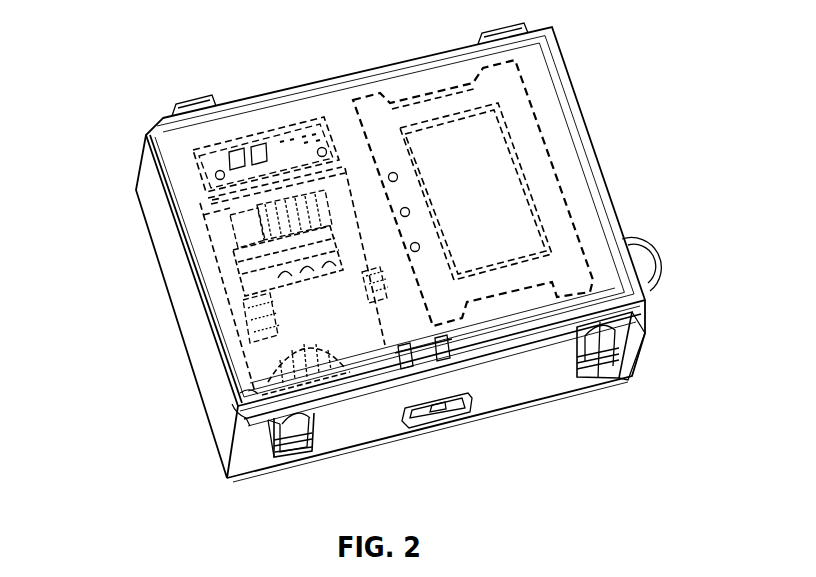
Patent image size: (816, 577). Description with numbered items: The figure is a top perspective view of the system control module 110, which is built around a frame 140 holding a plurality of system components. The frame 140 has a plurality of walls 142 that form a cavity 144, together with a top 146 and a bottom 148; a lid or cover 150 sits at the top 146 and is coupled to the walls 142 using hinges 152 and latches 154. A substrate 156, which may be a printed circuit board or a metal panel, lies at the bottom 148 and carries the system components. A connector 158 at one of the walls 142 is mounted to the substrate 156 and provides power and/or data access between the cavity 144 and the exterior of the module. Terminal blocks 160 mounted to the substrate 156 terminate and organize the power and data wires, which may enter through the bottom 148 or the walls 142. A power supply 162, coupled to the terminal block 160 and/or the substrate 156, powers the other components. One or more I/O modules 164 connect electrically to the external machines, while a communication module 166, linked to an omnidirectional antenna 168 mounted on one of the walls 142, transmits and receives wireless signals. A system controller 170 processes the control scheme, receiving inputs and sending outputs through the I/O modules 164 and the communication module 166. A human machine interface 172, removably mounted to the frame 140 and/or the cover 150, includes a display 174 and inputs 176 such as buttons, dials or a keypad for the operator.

The system control module 110 is at (630, 111).
The frame 140 is at (181, 328).
The walls 142 is at (205, 391).
The cavity 144 is at (585, 199).
The top 146 is at (386, 386).
The bottom 148 is at (345, 448).
The lid or cover 150 is at (268, 120).
The hinges 152 is at (192, 106).
The latches 154 is at (278, 464).
The substrate 156 is at (634, 345).
The connector 158 is at (448, 426).
The terminal blocks 160 is at (218, 442).
The power supply 162 is at (240, 337).
The I/O modules 164 is at (218, 238).
The communication module 166 is at (195, 188).
The antenna 168 is at (656, 262).
The system controller 170 is at (228, 273).
The human machine interface (HMI) 172 is at (537, 143).
The display 174 is at (462, 129).
The inputs 176 is at (393, 172).